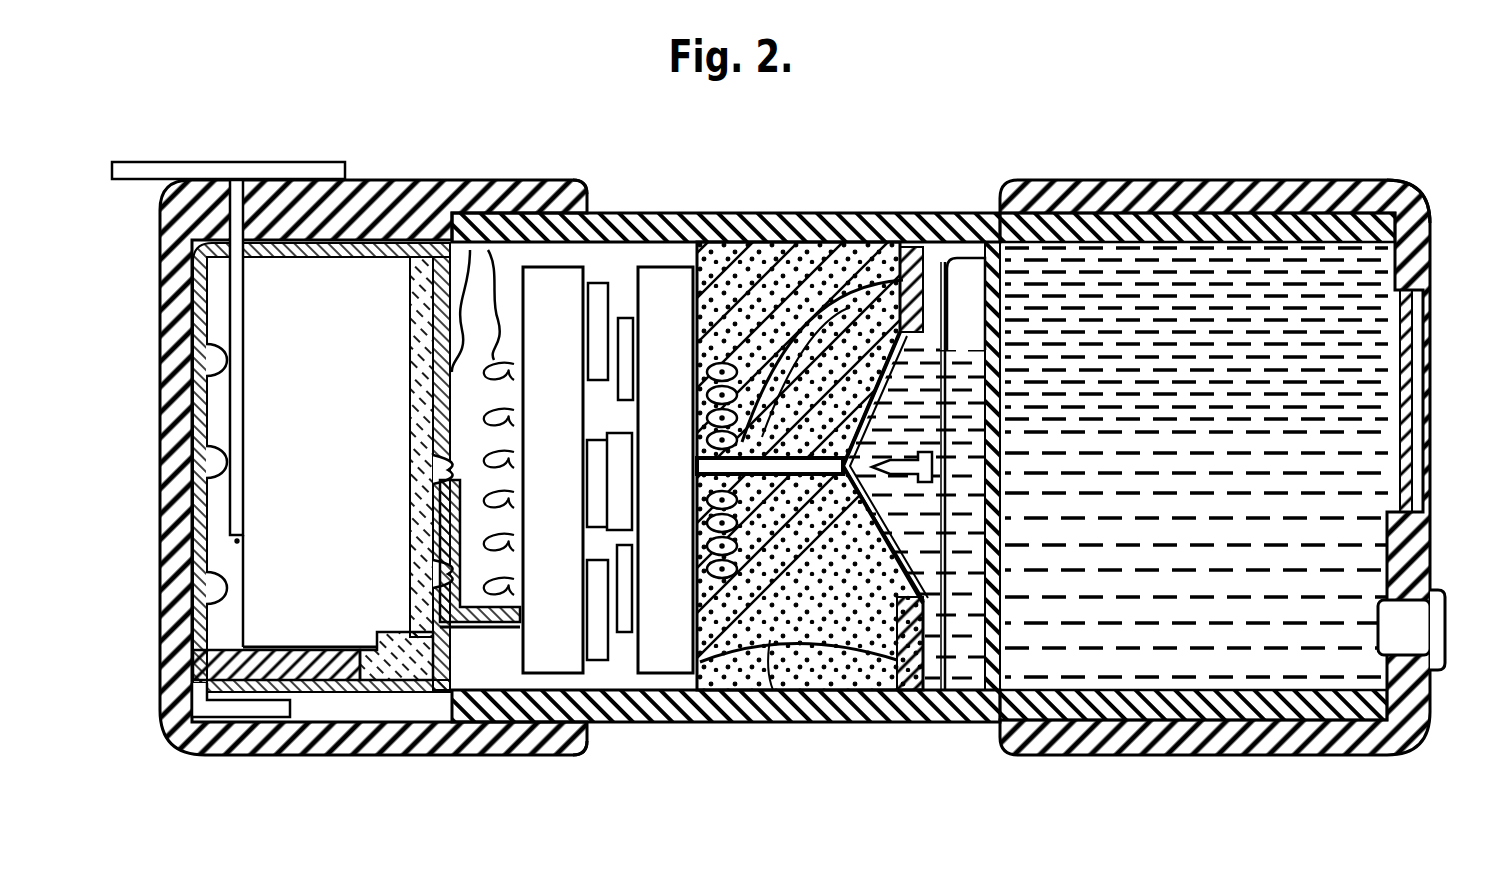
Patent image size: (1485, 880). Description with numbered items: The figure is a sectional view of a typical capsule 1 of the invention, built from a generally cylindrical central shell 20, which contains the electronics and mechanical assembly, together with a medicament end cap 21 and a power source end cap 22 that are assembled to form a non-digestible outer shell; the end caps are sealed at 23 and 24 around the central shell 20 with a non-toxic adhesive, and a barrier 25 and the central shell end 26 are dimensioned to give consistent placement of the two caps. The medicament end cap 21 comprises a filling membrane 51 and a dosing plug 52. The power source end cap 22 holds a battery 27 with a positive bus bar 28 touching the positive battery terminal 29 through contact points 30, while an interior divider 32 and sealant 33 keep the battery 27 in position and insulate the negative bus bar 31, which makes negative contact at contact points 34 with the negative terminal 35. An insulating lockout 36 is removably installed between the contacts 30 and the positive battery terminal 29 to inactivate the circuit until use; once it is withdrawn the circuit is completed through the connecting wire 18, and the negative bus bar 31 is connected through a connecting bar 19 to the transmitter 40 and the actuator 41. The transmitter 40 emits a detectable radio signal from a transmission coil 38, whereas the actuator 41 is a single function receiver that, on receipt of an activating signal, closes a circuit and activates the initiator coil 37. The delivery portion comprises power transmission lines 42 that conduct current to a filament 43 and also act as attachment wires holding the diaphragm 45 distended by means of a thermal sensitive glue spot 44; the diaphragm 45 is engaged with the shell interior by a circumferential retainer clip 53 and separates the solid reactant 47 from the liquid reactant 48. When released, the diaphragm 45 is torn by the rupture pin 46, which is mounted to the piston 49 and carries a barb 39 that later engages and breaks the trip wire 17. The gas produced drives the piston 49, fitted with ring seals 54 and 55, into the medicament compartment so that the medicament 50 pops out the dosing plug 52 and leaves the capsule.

The electrochemical cell 1 is at (676, 176).
The trip wire 17 is at (806, 312).
The connecting wire 18 is at (471, 323).
The connecting bar 19 is at (480, 553).
The central shell 20 is at (806, 213).
The medicament end cap 21 is at (1250, 186).
The power source end cap 22 is at (438, 180).
The seal 23 is at (525, 181).
The seal 24 is at (1140, 213).
The barrier 25 is at (452, 240).
The central shell end 26 is at (1366, 181).
The battery 27 is at (372, 205).
The positive bus bar 28 is at (290, 164).
The positive battery terminal 29 is at (243, 546).
The contact points 30 is at (228, 360).
The negative bus bar 31 is at (447, 671).
The interior divider 32 is at (332, 650).
The sealant 33 is at (418, 380).
The contact points 34 is at (420, 468).
The negative terminal 35 is at (406, 406).
The insulating lockout 36 is at (244, 300).
The initiator coil 37 is at (732, 373).
The transmission coil 38 is at (488, 462).
The barb 39 is at (936, 486).
The transmitter 40 is at (532, 323).
The actuator 41 is at (676, 323).
The power transmission lines 42 is at (740, 526).
The filament 43 is at (812, 460).
The glue spot 44 is at (686, 466).
The diaphragm 45 is at (884, 534).
The rupture pin 46 is at (890, 463).
The reactant 47 is at (773, 690).
The reactant 48 is at (1004, 608).
The piston 49 is at (1004, 408).
The medicament 50 is at (1171, 610).
The filling membrane 51 is at (1416, 385).
The dosing plug 52 is at (1446, 606).
The circumferential retainer clip 53 is at (909, 247).
The ring seal 54 is at (992, 242).
The ring seal 55 is at (960, 258).